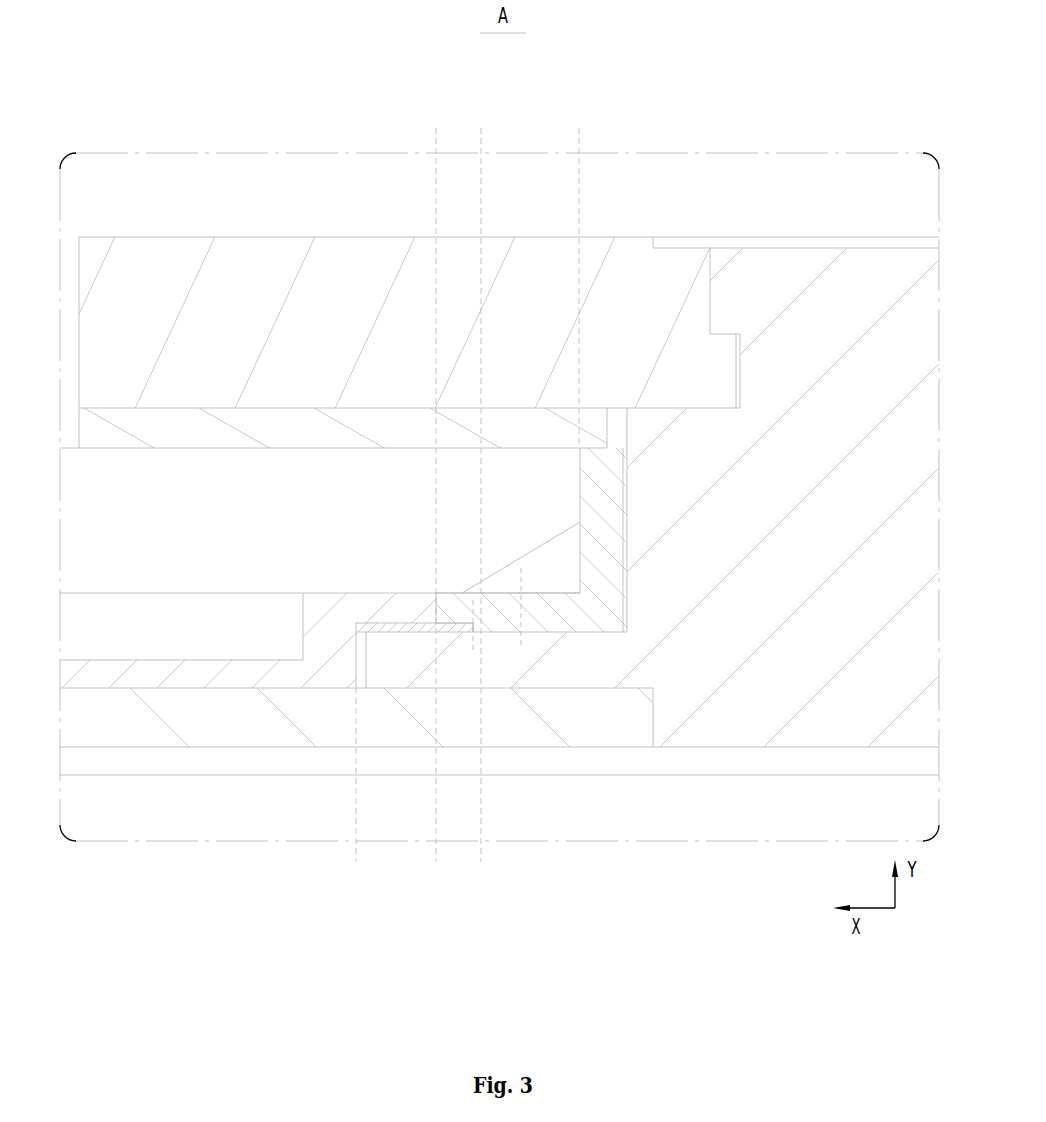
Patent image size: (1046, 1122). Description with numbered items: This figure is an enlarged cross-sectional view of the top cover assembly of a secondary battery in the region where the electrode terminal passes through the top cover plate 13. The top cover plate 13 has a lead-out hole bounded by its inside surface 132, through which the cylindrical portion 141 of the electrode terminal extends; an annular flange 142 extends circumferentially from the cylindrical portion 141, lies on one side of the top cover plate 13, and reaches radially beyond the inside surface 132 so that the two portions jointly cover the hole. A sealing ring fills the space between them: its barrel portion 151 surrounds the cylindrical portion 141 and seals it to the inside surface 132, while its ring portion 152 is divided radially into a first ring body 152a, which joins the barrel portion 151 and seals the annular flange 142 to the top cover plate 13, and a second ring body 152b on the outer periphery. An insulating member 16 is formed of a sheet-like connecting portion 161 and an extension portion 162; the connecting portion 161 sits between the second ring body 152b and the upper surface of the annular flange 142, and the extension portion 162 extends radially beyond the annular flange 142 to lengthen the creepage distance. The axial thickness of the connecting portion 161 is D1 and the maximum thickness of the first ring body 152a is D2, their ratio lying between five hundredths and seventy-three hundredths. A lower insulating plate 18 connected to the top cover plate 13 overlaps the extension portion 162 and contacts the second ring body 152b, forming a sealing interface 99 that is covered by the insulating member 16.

The top cover plate 13 is at (211, 530).
The lower insulating plate 18 is at (328, 622).
The sealing interface 99 is at (436, 611).
The inside surface 132 is at (586, 495).
The cylindrical portion 141 is at (880, 274).
The annular flange 142 is at (513, 660).
The barrel portion 151 is at (617, 553).
The ring portion 152 is at (443, 100).
The first ring body 152a is at (579, 141).
The second ring body 152b is at (436, 141).
The insulating member 16 is at (470, 889).
The connecting portion 161 is at (481, 855).
The extension portion 162 is at (436, 855).
The thickness of the connecting portion D1 is at (462, 635).
The maximum thickness of the first ring body D2 is at (531, 603).